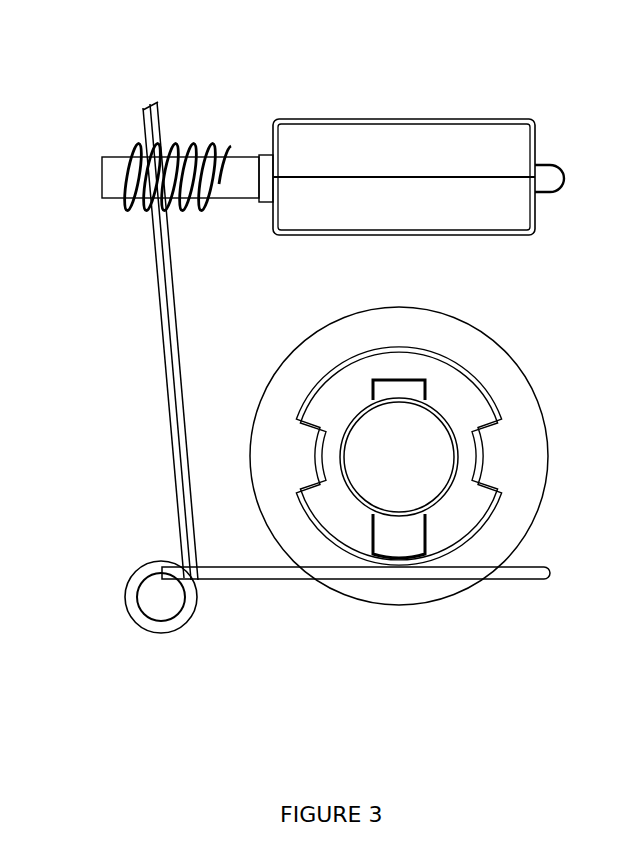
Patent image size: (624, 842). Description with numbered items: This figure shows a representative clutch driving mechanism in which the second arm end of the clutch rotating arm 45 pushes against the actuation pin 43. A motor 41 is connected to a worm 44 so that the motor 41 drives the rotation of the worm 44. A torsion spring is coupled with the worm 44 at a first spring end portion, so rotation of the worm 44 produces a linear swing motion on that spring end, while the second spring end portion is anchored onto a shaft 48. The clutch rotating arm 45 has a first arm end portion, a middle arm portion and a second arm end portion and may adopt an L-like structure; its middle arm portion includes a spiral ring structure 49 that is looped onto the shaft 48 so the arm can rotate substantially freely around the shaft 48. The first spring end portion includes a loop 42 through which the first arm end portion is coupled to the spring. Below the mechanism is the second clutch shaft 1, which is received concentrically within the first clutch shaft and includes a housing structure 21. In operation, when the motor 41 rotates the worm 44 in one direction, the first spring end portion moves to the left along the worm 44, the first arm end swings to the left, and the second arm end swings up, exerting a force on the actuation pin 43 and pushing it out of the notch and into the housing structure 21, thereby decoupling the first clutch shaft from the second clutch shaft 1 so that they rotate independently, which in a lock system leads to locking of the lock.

The second clutch shaft 1 is at (453, 402).
The housing structure 21 is at (423, 522).
The motor 41 is at (405, 143).
The loop 42 is at (142, 120).
The actuation pin 43 is at (403, 545).
The worm 44 is at (193, 208).
The clutch rotating arm 45 is at (160, 104).
The shaft 48 is at (162, 600).
The spiral ring structure 49 is at (138, 582).